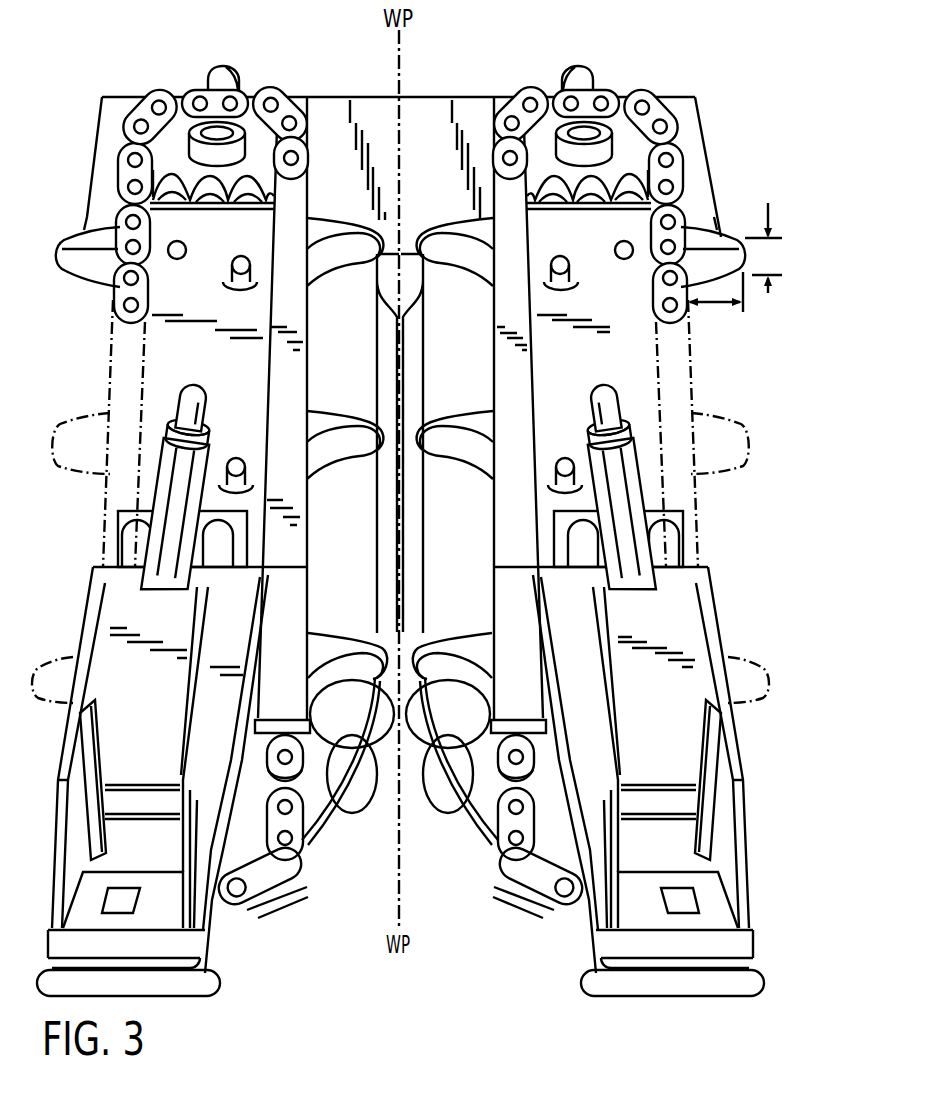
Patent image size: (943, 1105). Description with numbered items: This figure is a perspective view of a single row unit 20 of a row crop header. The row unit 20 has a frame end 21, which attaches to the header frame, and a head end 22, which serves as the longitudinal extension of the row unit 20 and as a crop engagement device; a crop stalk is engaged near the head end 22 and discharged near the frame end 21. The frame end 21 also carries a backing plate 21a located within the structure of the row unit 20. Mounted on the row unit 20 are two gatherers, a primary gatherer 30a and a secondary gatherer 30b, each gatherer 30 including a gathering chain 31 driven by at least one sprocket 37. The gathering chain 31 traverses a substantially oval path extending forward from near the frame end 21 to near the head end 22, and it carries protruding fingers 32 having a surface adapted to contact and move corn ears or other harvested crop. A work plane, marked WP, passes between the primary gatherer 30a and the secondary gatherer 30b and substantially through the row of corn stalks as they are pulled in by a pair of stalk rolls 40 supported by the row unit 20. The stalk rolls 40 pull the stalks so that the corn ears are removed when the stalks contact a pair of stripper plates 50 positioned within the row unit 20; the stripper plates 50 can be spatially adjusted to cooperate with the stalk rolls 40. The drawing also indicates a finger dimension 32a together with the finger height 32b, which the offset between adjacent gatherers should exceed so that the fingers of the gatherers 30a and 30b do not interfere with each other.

The row unit 20 is at (798, 231).
The frame end 21 is at (673, 96).
The backing plate 21a is at (420, 120).
The head end 22 is at (755, 932).
The gatherer 30 is at (184, 372).
The primary gatherer 30a is at (613, 337).
The secondary gatherer 30b is at (178, 343).
The gathering chain 31 is at (118, 300).
The protruding fingers 32 is at (93, 230).
The bracket width 32a is at (713, 304).
The finger height 32b is at (768, 293).
The sprocket 37 is at (188, 140).
The stalk rolls 40 is at (366, 812).
The stripper plates 50 is at (436, 812).